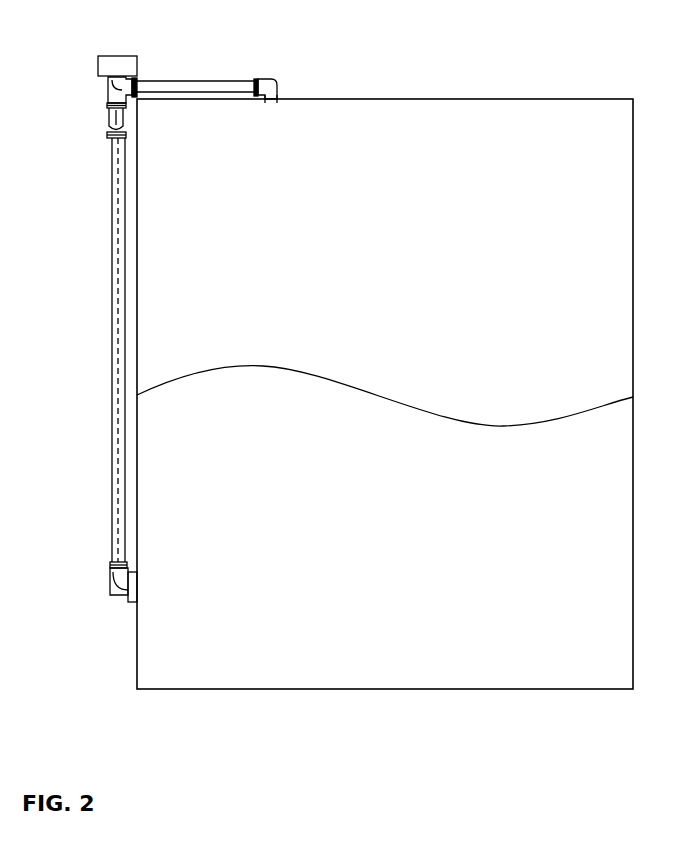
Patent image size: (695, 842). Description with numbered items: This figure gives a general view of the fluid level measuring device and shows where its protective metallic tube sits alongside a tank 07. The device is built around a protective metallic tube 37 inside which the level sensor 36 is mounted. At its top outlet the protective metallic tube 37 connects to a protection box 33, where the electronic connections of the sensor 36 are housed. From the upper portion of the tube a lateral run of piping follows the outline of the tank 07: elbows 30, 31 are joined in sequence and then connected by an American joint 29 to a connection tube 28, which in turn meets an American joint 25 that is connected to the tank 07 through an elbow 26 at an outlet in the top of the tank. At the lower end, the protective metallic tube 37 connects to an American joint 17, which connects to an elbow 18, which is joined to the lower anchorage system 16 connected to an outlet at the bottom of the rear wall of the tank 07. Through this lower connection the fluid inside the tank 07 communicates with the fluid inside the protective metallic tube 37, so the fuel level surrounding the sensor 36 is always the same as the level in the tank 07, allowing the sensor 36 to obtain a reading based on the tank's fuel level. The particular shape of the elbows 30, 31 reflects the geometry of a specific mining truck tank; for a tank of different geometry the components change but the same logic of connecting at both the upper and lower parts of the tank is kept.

The tank 07 is at (384, 590).
The lower anchorage system 16 is at (107, 599).
The American joint 17 is at (110, 564).
The elbow 18 is at (112, 583).
The American joint 25 is at (310, 76).
The elbow 26 is at (277, 90).
The connection tube 28 is at (233, 58).
The American joint 29 is at (96, 74).
The elbow 30 is at (110, 93).
The elbow 31 is at (109, 116).
The protection box 33 is at (80, 46).
The sensor 36 is at (118, 415).
The protective metallic tube 37 is at (112, 322).